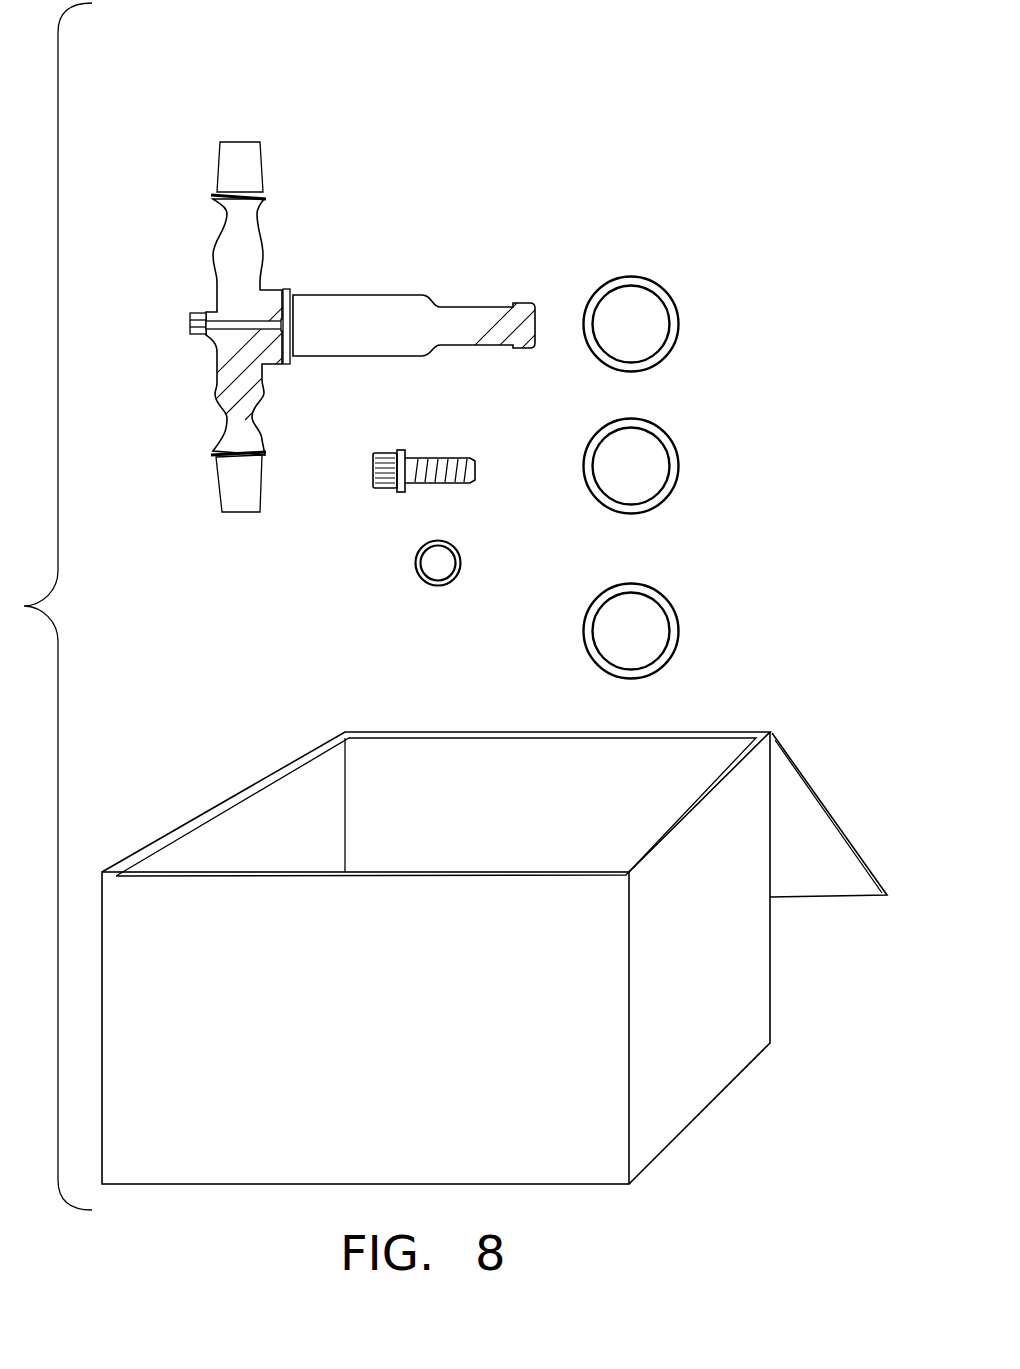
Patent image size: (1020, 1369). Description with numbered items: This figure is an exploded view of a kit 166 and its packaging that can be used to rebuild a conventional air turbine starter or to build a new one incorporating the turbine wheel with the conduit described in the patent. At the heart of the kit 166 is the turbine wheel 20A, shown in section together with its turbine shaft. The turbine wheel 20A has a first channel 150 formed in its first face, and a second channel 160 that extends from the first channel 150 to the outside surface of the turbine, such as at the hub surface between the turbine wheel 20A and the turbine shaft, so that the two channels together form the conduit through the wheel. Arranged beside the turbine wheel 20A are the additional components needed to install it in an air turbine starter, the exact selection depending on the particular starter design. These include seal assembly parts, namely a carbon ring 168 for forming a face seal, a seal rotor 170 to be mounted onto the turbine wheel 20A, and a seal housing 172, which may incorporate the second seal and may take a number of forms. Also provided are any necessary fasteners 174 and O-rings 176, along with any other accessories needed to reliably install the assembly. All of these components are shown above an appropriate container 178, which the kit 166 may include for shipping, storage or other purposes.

The turbine wheel 20A is at (190, 248).
The first channel 150 is at (231, 341).
The second channel 160 is at (291, 302).
The kit 166 is at (575, 113).
The carbon ring 168 is at (657, 281).
The seal rotor 170 is at (666, 432).
The seal housing 172 is at (672, 604).
The fasteners 174 is at (436, 455).
The O-rings 176 is at (454, 539).
The container 178 is at (378, 930).